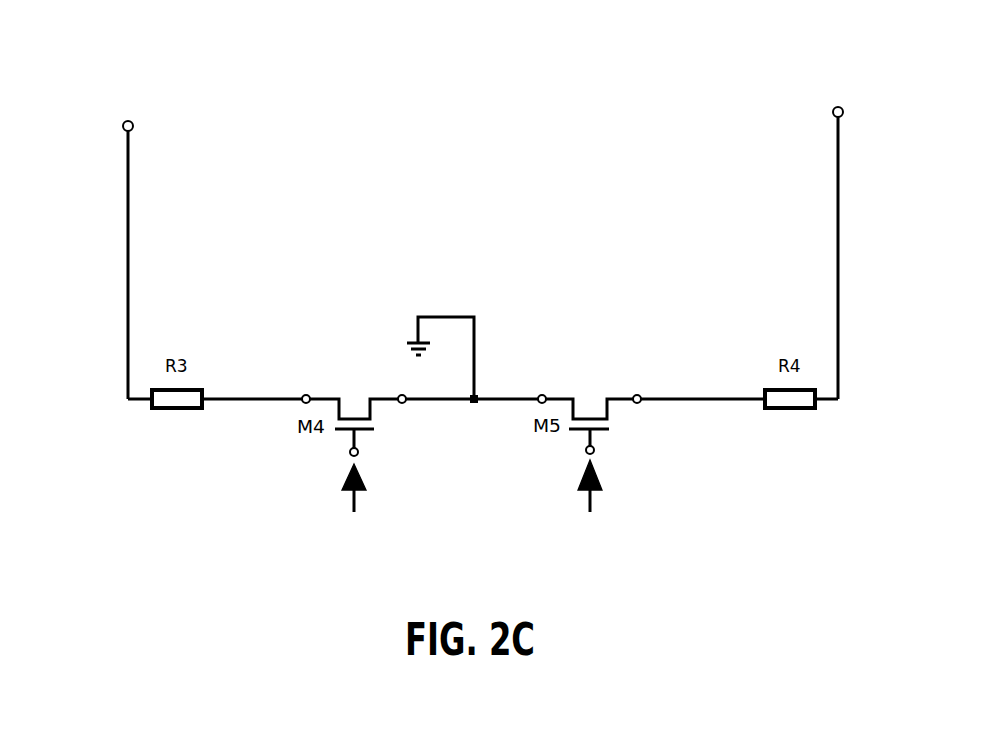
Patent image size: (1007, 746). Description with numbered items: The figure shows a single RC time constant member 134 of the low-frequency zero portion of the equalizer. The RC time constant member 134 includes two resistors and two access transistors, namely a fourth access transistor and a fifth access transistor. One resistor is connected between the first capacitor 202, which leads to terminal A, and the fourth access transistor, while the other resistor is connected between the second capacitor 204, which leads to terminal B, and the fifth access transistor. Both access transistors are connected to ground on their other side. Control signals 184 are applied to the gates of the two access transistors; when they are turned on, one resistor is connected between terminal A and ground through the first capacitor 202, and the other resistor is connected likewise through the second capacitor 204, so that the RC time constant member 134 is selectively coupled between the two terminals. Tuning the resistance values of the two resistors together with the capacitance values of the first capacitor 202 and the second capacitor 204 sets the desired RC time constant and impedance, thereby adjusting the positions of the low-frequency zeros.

The RC time constant member 134 is at (287, 44).
The control signals 184 is at (364, 486).
The first capacitor 202 is at (168, 91).
The second capacitor 204 is at (768, 82).